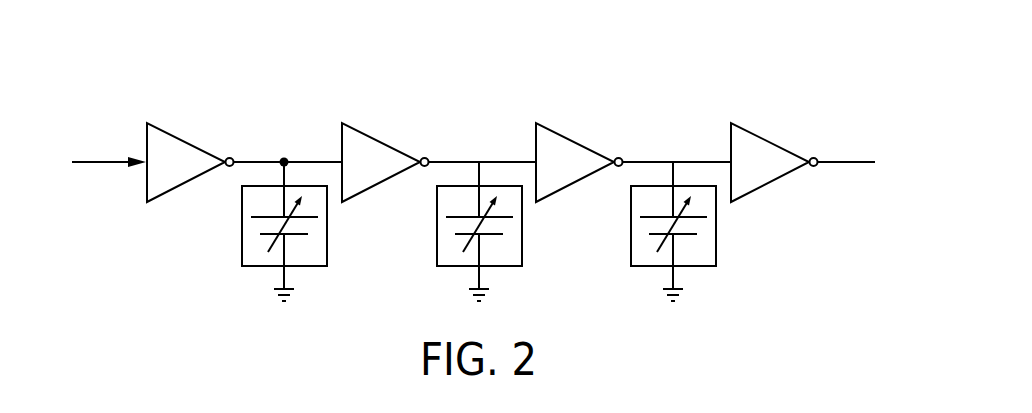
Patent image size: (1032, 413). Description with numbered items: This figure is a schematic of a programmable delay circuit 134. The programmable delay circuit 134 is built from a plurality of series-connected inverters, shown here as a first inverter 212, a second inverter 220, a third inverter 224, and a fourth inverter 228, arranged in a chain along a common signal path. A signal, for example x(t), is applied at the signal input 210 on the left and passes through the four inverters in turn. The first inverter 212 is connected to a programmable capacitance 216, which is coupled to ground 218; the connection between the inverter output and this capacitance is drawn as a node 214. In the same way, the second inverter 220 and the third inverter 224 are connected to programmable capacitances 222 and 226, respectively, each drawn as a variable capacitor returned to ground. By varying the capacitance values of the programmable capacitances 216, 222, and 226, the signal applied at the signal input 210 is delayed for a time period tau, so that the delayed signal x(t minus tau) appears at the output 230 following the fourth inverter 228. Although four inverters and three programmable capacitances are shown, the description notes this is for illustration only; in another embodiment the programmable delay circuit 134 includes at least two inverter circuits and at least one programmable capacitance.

The programmable delay circuit 134 is at (686, 57).
The signal input 210 is at (98, 160).
The inverter td1 212 is at (189, 139).
The node 214 is at (284, 157).
The programmable capacitance 216 is at (328, 244).
The ground 218 is at (296, 290).
The inverter td2 220 is at (384, 139).
The programmable capacitance 222 is at (523, 244).
The inverter td3 224 is at (580, 139).
The programmable capacitance 226 is at (717, 244).
The inverter td4 228 is at (775, 139).
The output 230 is at (845, 160).